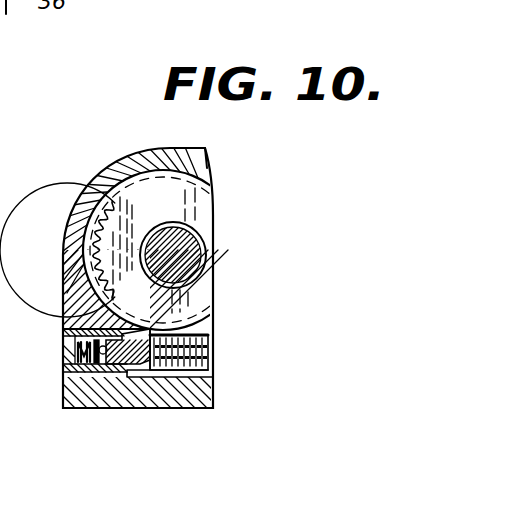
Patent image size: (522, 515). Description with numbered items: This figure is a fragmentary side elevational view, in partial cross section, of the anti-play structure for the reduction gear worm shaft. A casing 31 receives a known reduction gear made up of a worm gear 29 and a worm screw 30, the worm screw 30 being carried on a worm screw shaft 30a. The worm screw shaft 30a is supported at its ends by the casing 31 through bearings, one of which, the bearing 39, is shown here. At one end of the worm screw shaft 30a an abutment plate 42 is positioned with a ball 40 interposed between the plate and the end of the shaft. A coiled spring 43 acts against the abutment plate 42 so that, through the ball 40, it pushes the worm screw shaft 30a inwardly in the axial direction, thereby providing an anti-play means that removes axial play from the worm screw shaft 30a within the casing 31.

The worm gear 29 is at (103, 183).
The casing 31 is at (150, 152).
The worm screw 30 is at (210, 353).
The worm screw shaft 30a is at (168, 407).
The bearing 39 is at (93, 374).
The ball 40 is at (110, 364).
The abutment plate 42 is at (97, 369).
The coiled spring 43 is at (93, 351).